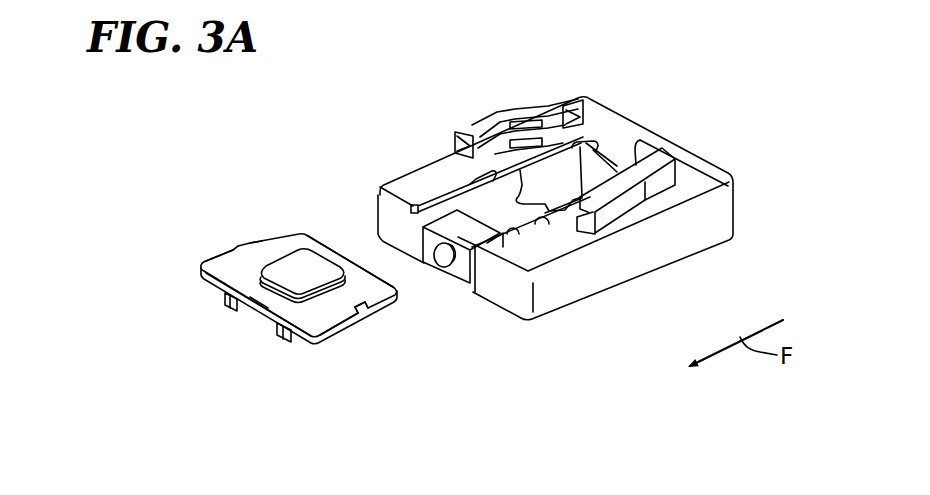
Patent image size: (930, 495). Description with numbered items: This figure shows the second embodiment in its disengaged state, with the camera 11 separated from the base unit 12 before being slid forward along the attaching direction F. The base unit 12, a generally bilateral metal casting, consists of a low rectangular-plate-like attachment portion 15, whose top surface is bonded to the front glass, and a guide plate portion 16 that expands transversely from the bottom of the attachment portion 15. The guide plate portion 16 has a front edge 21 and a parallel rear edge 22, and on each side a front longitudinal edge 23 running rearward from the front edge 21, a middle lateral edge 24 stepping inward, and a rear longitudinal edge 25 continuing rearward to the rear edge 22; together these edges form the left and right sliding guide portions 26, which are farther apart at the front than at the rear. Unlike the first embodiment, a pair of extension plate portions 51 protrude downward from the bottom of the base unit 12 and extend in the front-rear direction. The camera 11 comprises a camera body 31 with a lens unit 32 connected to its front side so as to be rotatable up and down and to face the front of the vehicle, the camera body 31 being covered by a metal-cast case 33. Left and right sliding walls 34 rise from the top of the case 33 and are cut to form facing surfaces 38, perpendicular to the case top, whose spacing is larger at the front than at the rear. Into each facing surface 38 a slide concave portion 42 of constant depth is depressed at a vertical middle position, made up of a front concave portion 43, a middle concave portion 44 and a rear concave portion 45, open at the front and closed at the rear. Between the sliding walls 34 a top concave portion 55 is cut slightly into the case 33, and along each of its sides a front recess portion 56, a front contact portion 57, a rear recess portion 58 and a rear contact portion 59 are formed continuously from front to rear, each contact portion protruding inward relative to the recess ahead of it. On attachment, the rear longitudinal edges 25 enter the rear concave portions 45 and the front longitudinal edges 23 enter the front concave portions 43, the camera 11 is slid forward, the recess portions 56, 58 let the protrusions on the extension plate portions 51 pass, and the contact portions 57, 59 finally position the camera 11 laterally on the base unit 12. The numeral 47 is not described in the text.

The camera 11 is at (684, 271).
The base unit 12 is at (246, 329).
The attachment portion 15 is at (290, 262).
The guide plate portion 16 is at (272, 298).
The front edge 21 is at (270, 318).
The rear edge 22 is at (351, 258).
The front longitudinal edge 23 is at (217, 254).
The middle lateral edge 24 is at (260, 249).
The rear longitudinal edge 25 is at (284, 249).
The sliding guide portion 26 is at (240, 253).
The engaging portion 47 is at (360, 304).
The extension plate portion 51 is at (225, 299).
The camera body 31 is at (660, 125).
The lens unit 32 is at (414, 205).
The case 33 is at (698, 228).
The sliding wall 34 is at (527, 122).
The facing surface 38 is at (583, 118).
The slide concave portion 42 is at (603, 124).
The front concave portion 43 is at (495, 107).
The middle concave portion 44 is at (550, 122).
The rear concave portion 45 is at (562, 140).
The top concave portion 55 is at (480, 205).
The front recess portion 56 is at (450, 233).
The front contact portion 57 is at (482, 175).
The rear recess portion 58 is at (482, 180).
The rear contact portion 59 is at (583, 146).